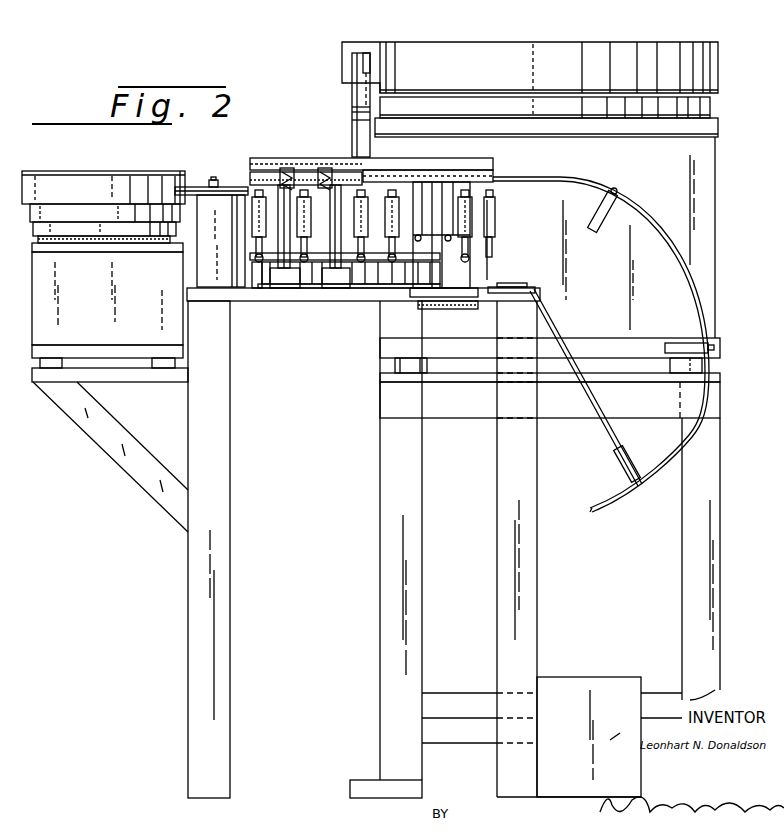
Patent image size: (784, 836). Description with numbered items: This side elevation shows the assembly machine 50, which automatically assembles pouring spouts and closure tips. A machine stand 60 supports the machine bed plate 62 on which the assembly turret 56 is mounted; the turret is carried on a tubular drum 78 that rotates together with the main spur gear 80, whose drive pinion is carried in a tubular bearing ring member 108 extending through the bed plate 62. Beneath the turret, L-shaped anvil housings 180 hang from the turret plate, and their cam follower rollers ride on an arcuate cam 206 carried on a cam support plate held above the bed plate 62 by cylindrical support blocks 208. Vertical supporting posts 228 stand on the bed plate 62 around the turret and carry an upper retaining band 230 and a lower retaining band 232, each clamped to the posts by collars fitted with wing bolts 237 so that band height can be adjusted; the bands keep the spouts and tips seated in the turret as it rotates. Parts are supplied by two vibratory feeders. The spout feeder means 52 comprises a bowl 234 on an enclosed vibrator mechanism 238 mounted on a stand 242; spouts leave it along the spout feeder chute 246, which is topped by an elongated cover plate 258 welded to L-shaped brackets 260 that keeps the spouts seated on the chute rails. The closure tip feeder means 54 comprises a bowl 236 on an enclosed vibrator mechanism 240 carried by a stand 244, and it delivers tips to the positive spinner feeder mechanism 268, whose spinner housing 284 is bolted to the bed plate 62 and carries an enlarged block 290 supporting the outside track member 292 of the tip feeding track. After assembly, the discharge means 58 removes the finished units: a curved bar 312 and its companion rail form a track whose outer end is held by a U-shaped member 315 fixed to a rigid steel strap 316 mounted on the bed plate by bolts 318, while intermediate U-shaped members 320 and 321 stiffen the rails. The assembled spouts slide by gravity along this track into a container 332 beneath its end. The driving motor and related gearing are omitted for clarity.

The assembly machine 50 is at (380, 213).
The spout hopper and feeder means 52 is at (530, 68).
The closure tip feeder means 54 is at (103, 191).
The assembly turret 56 is at (316, 121).
The discharge means 58 is at (493, 192).
The machine stand 60 is at (222, 644).
The machine bed plate 62 is at (316, 300).
The tubular drum 78 is at (373, 222).
The main spur gear 80 is at (378, 280).
The tubular bearing ring member 108 is at (452, 320).
The anvil housing 180 is at (262, 232).
The arcuate cam 206 is at (410, 268).
The cylindrical support blocks 208 is at (266, 298).
The vertical supporting posts 228 is at (292, 300).
The upper retaining band 230 is at (284, 172).
The lower retaining band 232 is at (263, 170).
The bowl 234 is at (670, 48).
The bowl 236 is at (140, 185).
The wing bolts 237 is at (318, 172).
The enclosed vibrator mechanism 238 is at (700, 168).
The enclosed vibrator mechanism 240 is at (107, 305).
The stand 242 is at (710, 465).
The stand 244 is at (108, 452).
The spout feeder chute 246 is at (370, 86).
The elongated cover plate 258 is at (365, 65).
The L-shaped brackets 260 is at (368, 108).
The positive spinner feeder mechanism 268 is at (204, 181).
The spinner housing 284 is at (206, 292).
The enlarged block 290 is at (183, 250).
The outside track member 292 is at (215, 169).
The curved bar 312 is at (637, 497).
The U-shaped member 315 is at (622, 472).
The steel strap 316 is at (607, 405).
The bolts 318 is at (505, 286).
The U-shaped member 320 is at (598, 230).
The U-shaped member 321 is at (665, 343).
The container 332 is at (604, 683).